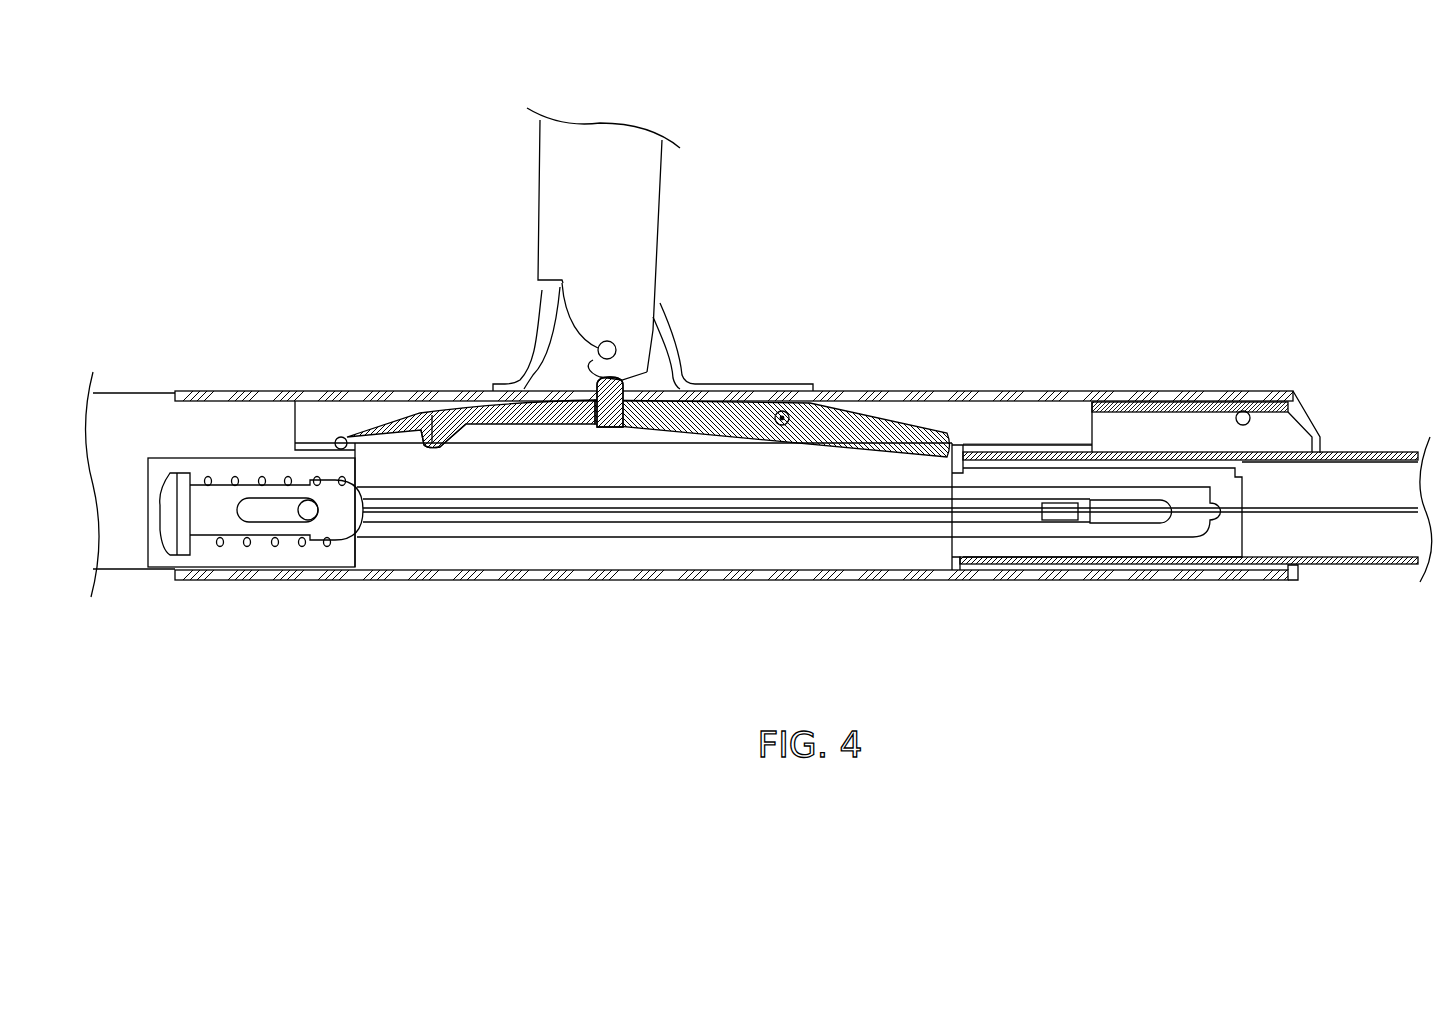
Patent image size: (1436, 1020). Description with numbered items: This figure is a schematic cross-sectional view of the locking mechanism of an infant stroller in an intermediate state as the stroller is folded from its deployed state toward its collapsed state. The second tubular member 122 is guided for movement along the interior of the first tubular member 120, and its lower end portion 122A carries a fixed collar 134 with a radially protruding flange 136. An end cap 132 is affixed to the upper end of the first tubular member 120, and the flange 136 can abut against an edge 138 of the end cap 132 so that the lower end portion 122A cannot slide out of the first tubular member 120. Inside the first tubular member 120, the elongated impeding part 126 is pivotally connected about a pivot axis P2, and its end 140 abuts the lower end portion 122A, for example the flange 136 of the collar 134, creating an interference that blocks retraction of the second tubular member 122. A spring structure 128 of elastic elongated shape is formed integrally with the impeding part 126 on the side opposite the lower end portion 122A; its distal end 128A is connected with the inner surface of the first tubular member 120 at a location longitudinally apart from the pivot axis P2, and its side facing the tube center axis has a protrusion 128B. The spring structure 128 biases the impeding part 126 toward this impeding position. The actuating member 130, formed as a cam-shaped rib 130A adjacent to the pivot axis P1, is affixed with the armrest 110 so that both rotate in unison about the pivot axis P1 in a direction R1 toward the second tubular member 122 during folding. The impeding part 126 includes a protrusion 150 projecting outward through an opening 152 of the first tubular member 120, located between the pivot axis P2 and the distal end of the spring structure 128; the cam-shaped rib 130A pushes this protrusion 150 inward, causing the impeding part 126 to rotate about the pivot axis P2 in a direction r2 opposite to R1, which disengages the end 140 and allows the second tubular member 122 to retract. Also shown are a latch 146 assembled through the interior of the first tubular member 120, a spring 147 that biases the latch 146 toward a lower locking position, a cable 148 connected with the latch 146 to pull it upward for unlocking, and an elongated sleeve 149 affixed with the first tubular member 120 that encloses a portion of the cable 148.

The armrest 110 is at (573, 240).
The first tubular member 120 is at (730, 580).
The second tubular member 122 is at (1343, 453).
The lower end portion 122A is at (992, 430).
The impeding part 126 is at (772, 384).
The spring structure 128 is at (444, 389).
The distal end 128A is at (335, 436).
The protrusion 128B is at (440, 432).
The actuating member 130 is at (653, 288).
The cam-shaped rib 130A is at (673, 303).
The end cap 132 is at (1215, 391).
The collar 134 is at (1100, 463).
The flange 136 is at (953, 581).
The edge 138 is at (1078, 423).
The end 140 is at (948, 442).
The latch 146 is at (292, 532).
The spring 147 is at (218, 546).
The cable 148 is at (1343, 518).
The elongated sleeve 149 is at (535, 533).
The protrusion 150 is at (627, 377).
The opening 152 is at (588, 378).
The direction R1 is at (675, 214).
The pivot axis P1 is at (560, 303).
The pivot axis P2 is at (785, 410).
The direction r2 is at (866, 414).